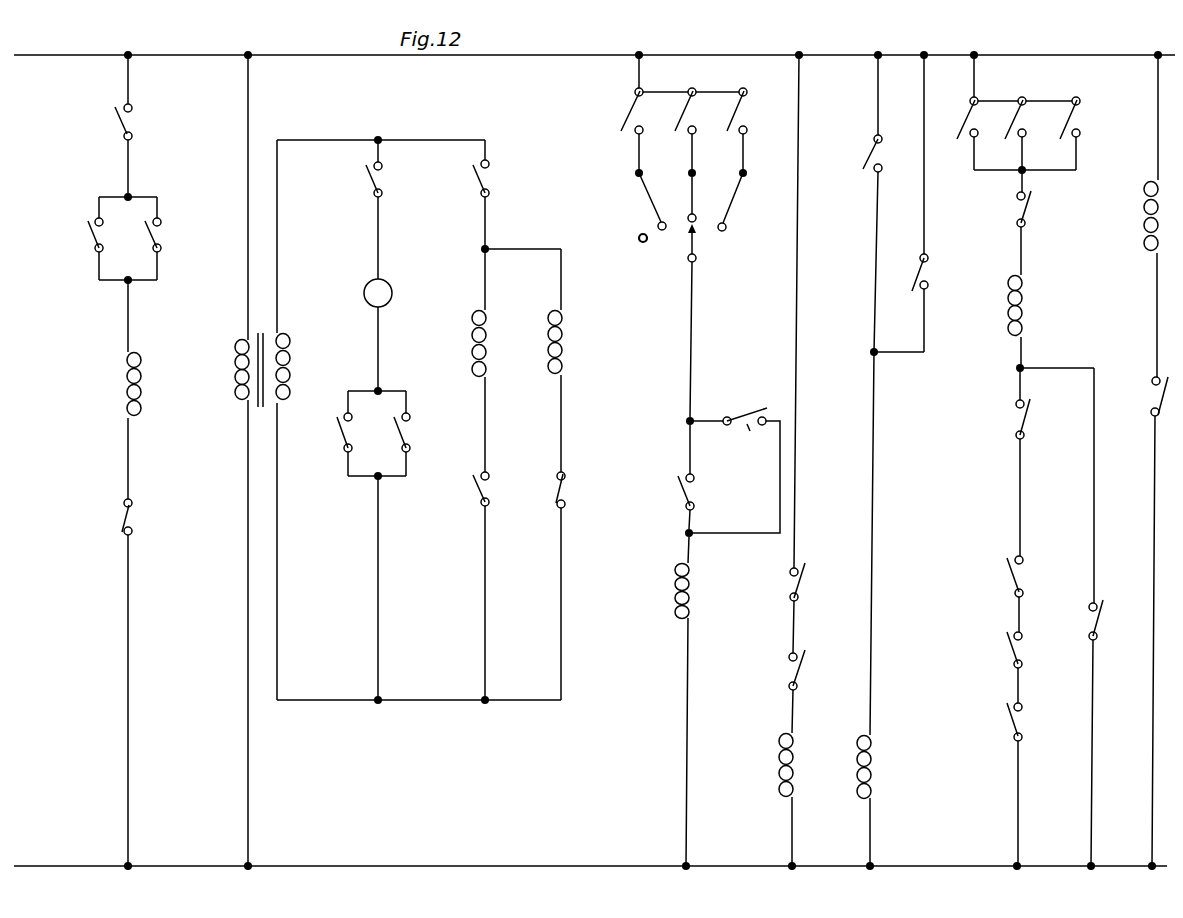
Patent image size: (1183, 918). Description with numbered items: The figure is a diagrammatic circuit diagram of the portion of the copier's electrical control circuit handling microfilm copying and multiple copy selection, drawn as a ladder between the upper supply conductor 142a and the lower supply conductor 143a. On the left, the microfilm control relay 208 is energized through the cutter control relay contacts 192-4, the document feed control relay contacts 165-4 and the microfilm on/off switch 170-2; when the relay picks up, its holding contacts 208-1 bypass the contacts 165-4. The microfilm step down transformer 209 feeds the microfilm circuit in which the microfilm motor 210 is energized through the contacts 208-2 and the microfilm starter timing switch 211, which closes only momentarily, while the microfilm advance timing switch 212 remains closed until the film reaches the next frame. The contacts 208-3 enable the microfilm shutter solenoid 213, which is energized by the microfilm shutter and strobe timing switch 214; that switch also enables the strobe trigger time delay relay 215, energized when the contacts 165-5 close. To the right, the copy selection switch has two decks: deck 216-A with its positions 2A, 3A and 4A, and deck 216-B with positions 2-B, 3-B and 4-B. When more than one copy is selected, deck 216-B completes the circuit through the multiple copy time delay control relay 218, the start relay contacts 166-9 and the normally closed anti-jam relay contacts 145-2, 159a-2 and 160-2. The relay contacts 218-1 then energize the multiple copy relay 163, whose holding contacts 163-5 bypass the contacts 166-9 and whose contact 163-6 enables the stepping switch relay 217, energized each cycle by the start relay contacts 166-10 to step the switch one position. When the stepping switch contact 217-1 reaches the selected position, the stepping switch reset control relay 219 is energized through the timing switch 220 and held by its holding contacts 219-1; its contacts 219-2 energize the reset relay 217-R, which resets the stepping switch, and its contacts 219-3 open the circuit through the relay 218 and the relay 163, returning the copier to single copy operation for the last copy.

The supply conductor 142a is at (40, 55).
The supply conductor 143a is at (38, 866).
The contacts of cutter control relay 192-4 is at (118, 135).
The holding contacts 208-1 is at (90, 242).
The contacts of document feed control relay 165-4 is at (160, 237).
The microfilm control relay 208 is at (122, 399).
The microfilm step down transformer 209 is at (239, 392).
The microfilm on/off switch 170-2 is at (124, 509).
The contacts of microfilm control relay 208-2 is at (362, 178).
The microfilm motor 210 is at (392, 296).
The microfilm shutter and strobe timing switch 214 is at (490, 184).
The microfilm shutter solenoid 213 is at (473, 344).
The strobe trigger time delay relay 215 is at (566, 350).
The microfilm advance timing switch 212 is at (336, 441).
The microfilm starter timing switch 211 is at (408, 433).
The contacts of microfilm control relay 208-3 is at (457, 504).
The contacts of document feed control relay 165-5 is at (557, 494).
The deck A of copy selection switch 216-A is at (691, 75).
The switch contact 2A is at (629, 116).
The switch contact 3A is at (680, 117).
The switch contact 4A is at (735, 120).
The stepping switch contact 217-1 is at (694, 240).
The holding contacts of reset control relay 219-1 is at (734, 470).
The timing switch 220 is at (682, 500).
The stepping switch reset control relay 219 is at (676, 599).
The contact of multiple copy relay 163-6 is at (797, 594).
The contacts of start relay 166-10 is at (797, 681).
The stepping switch relay 217 is at (784, 777).
The reset relay 217-R is at (876, 786).
The contacts of reset control relay 219-2 is at (930, 283).
The deck B of copy selection switch 216-B is at (1025, 80).
The switch contact 2-B is at (998, 131).
The switch contact 3-B is at (1046, 131).
The switch contact 4-B is at (1096, 130).
The contacts of reset control relay 219-3 is at (994, 212).
The multiple copy relay 163 is at (1143, 232).
The multiple copy time delay control relay 218 is at (1031, 333).
The multiple copy time delay relay contacts 218-1 is at (1151, 379).
The contacts of start relay 166-9 is at (989, 421).
The normally closed contacts of anti-jam time delay relay 160-2 is at (1009, 580).
The normally closed contacts of anti-jam time delay relay 159a-2 is at (1009, 654).
The holding contacts of multiple copy relay 163-5 is at (1090, 612).
The normally closed contacts of anti-jam time delay relay 145-2 is at (1006, 719).